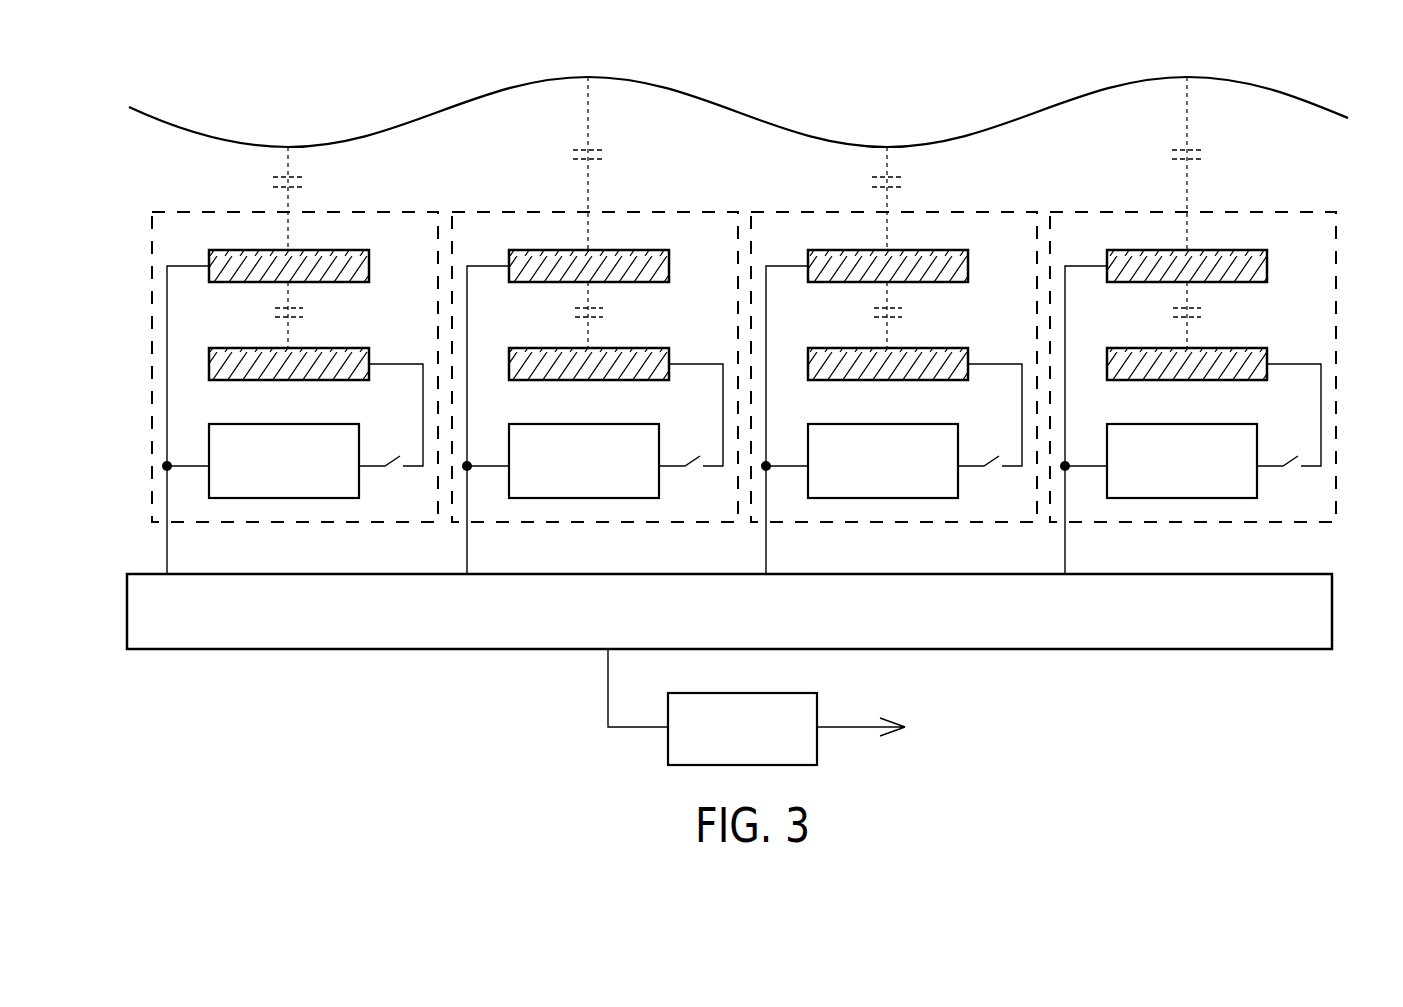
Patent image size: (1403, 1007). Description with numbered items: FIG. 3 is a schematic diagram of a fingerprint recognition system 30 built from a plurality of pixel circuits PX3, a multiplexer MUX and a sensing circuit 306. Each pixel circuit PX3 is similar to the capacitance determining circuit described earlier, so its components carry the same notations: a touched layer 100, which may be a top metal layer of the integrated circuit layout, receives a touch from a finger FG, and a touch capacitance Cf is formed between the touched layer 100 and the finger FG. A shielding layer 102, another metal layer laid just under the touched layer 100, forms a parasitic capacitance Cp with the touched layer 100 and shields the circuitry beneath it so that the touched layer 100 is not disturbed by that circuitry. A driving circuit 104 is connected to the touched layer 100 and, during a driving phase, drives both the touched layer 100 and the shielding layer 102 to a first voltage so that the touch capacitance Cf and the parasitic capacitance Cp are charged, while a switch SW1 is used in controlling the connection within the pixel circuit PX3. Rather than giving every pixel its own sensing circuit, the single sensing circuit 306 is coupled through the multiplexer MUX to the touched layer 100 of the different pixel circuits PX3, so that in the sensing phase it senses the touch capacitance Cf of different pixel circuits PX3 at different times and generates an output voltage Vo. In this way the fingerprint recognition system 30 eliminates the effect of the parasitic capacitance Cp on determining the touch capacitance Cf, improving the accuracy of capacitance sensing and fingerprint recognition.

The fingerprint recognition system 30 is at (764, 421).
The touched layer 100 is at (1255, 232).
The shielding layer 102 is at (1255, 330).
The driving circuit 104 is at (1255, 406).
The sensing circuit 306 is at (798, 692).
The finger FG is at (738, 112).
The touch capacitance Cf is at (720, 212).
The parasitic capacitance Cp is at (718, 318).
The switch SW1 is at (840, 432).
The pixel circuit PX3 is at (1218, 552).
The multiplexer MUX is at (1230, 649).
The output voltage Vo is at (883, 727).